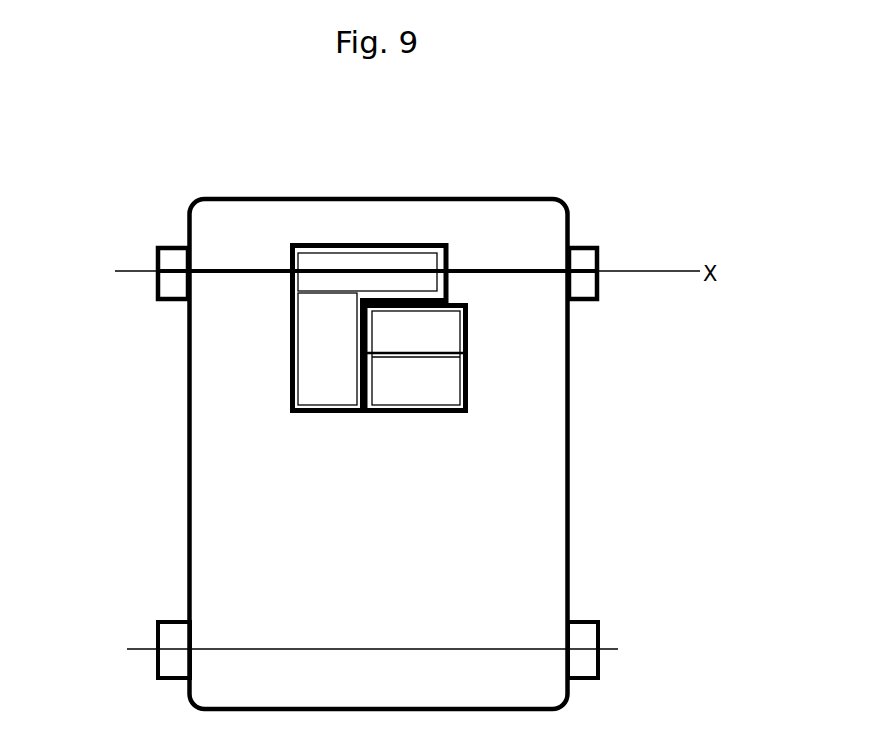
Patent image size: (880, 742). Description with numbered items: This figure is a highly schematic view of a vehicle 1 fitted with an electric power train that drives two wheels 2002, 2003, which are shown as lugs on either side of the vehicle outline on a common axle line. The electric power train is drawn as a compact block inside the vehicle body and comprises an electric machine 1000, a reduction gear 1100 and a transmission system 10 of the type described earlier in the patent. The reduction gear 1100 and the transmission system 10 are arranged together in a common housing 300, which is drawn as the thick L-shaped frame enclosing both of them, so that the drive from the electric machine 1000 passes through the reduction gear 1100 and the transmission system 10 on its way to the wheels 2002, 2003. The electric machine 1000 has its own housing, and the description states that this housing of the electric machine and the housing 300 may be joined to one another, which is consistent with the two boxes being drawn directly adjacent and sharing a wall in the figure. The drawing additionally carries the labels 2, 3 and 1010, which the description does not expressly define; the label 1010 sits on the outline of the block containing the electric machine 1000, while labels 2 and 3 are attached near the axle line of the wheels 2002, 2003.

The vehicle 1 is at (568, 553).
The first housing section 2 is at (240, 272).
The second housing section 3 is at (510, 272).
The transmission system 10 is at (423, 253).
The housing 300 is at (287, 358).
The electric machine 1000 is at (417, 378).
The module housing 1010 is at (468, 370).
The reduction gear 1100 is at (320, 375).
The wheel 2002 is at (170, 248).
The wheel 2003 is at (598, 262).